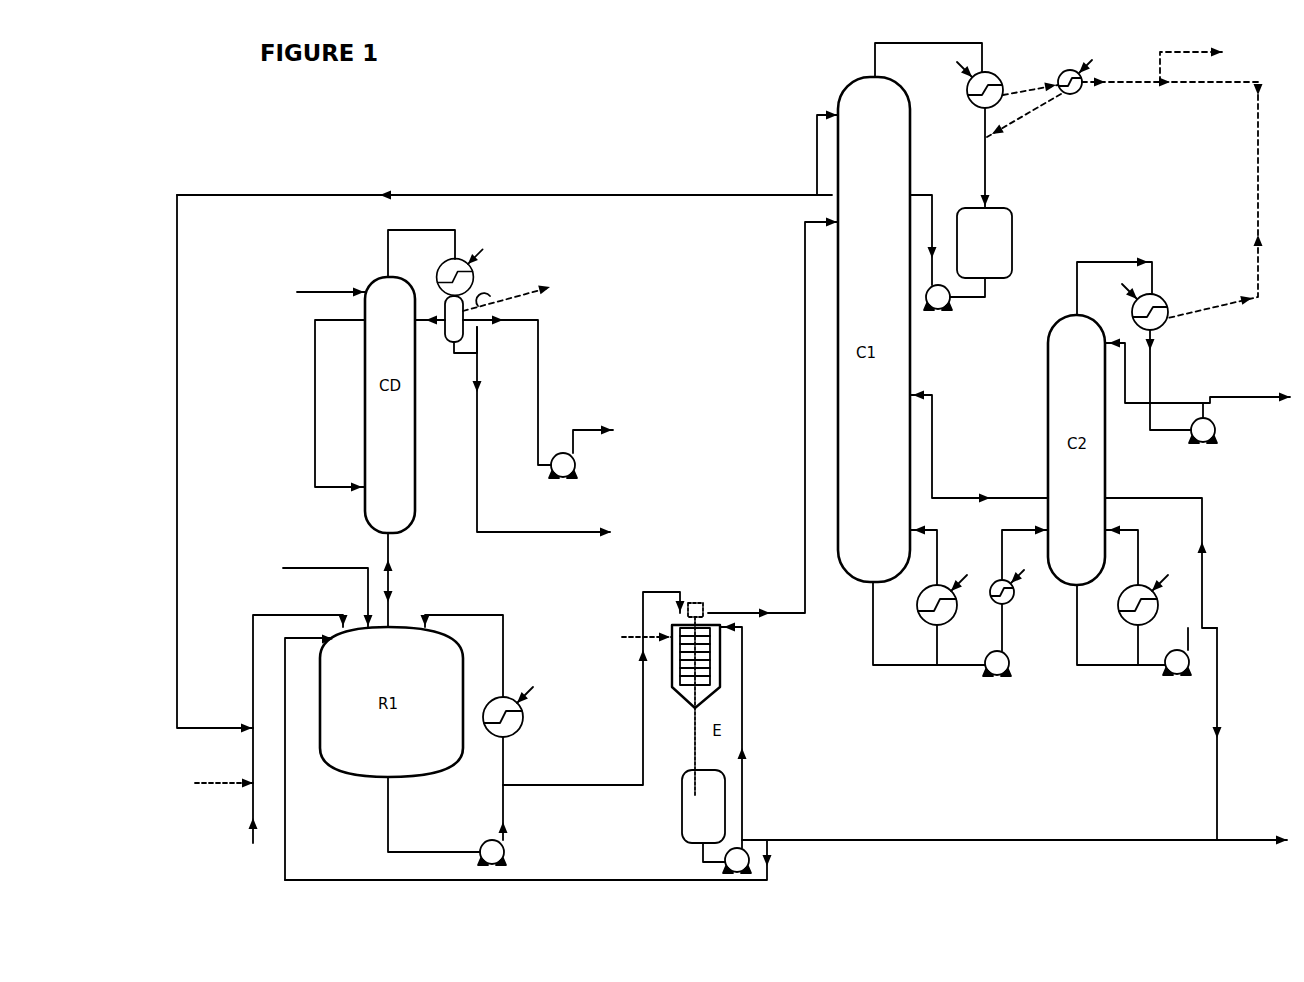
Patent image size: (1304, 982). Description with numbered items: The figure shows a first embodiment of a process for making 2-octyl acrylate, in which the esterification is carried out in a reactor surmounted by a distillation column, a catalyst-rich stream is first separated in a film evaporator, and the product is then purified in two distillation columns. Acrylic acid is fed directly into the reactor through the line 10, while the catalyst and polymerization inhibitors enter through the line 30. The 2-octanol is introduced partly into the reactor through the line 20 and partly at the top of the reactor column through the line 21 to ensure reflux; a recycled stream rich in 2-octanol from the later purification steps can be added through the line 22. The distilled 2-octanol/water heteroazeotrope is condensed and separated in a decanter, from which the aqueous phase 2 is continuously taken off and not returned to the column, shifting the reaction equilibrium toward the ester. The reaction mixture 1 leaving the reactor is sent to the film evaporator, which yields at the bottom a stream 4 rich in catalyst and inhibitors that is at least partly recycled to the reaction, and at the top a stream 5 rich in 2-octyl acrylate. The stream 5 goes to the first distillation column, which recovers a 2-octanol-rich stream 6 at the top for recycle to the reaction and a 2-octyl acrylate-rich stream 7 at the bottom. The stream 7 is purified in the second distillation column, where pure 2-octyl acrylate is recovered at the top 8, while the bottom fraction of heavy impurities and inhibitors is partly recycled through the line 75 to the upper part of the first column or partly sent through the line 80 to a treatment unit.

The reaction mixture 1 is at (594, 688).
The aqueous phase 2 is at (553, 435).
The stream rich in catalyst and polymerization inhibitors 4 is at (528, 860).
The stream rich in 2-octyl acrylate 5 is at (773, 418).
The stream rich in 2-octanol 6 is at (507, 155).
The stream rich in 2-octyl acrylate 7 is at (918, 623).
The top stream of pure 2-octyl acrylate 8 is at (1197, 371).
The acrylic acid line 10 is at (293, 744).
The 2-octanol line to reactor 20 is at (206, 781).
The 2-octanol line to column top 21 is at (318, 285).
The recycled 2-octanol-rich stream line 22 is at (215, 464).
The catalyst and polymerization inhibitor line 30 is at (315, 586).
The recycle line to column C1 75 is at (979, 447).
The line to treatment unit 80 is at (1014, 736).